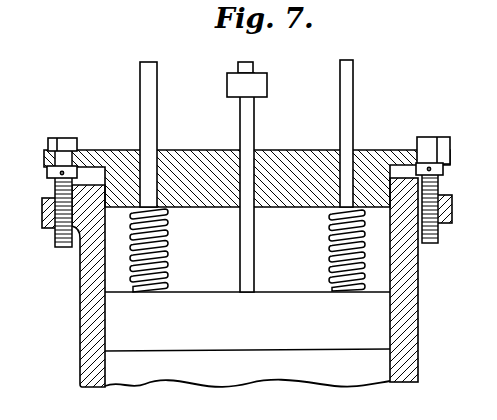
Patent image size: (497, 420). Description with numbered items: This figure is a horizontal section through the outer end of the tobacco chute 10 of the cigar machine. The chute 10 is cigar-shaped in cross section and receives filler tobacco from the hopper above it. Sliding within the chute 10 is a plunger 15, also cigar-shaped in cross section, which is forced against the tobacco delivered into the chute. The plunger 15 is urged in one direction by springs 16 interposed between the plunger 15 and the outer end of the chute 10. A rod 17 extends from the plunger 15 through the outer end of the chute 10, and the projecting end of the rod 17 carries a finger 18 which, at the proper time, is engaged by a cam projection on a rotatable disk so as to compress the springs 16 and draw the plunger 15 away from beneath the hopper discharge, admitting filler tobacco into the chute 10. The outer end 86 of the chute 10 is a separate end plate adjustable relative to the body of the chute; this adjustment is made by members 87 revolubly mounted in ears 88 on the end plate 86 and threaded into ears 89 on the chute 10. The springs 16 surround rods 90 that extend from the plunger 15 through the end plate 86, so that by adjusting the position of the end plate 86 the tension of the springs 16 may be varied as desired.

The chute 10 is at (408, 293).
The plunger 15 is at (270, 300).
The springs 16 is at (168, 243).
The rod 17 is at (250, 119).
The finger 18 is at (267, 83).
The end plate 86 is at (186, 156).
The members 87 is at (60, 134).
The ears on the end plate 88 is at (43, 158).
The ears on the chute 89 is at (42, 219).
The rods 90 is at (150, 91).